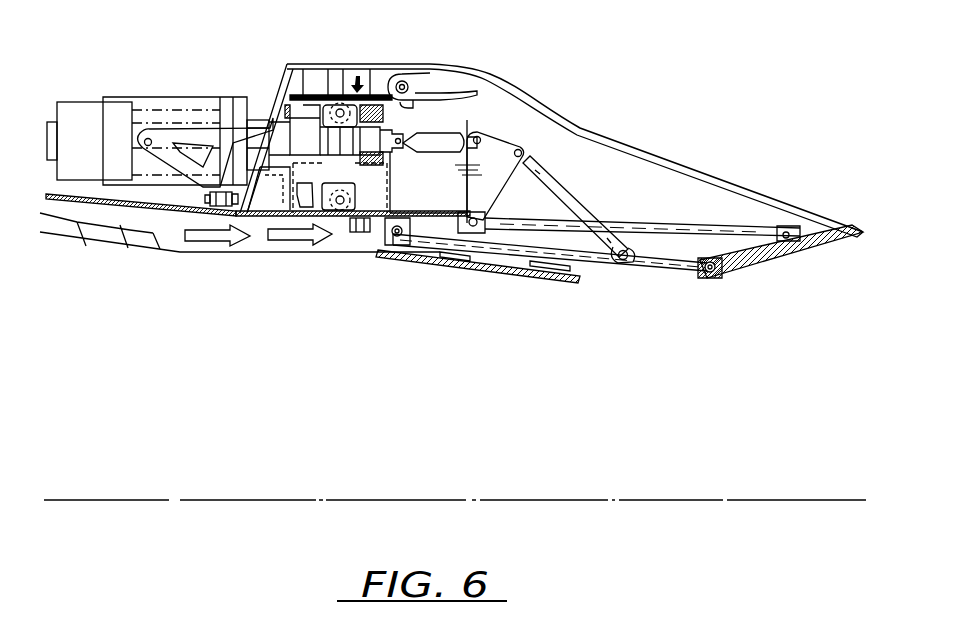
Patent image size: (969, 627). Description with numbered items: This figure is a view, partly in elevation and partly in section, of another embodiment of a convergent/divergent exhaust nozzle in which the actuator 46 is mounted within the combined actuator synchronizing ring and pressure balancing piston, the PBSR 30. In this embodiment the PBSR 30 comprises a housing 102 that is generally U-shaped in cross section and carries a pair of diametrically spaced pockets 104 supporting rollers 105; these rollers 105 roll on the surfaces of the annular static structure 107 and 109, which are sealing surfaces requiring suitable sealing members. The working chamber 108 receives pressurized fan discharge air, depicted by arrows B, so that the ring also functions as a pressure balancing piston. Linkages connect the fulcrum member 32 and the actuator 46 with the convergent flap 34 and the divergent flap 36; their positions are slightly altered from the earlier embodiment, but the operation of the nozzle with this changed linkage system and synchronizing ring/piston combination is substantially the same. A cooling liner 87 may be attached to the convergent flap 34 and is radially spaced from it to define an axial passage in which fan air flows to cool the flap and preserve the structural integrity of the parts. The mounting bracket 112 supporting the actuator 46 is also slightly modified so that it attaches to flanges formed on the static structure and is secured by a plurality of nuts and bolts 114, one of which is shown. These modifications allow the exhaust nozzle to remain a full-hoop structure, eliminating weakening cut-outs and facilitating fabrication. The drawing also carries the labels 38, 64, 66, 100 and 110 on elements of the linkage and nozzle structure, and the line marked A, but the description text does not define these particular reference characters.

The combined actuator synchronizing ring and pressure balancing piston (PBSR) 30 is at (360, 68).
The fulcrum link 32 is at (495, 135).
The convergent flap 34 is at (596, 267).
The divergent flap 36 is at (757, 264).
The actuator rod 38 is at (447, 133).
The actuator 46 is at (188, 97).
The strut 64 is at (570, 192).
The connecting rod 66 is at (633, 223).
The cooling liner 87 is at (478, 280).
The hinge body 100 is at (289, 66).
The housing 102 is at (392, 192).
The pocket 104 is at (313, 128).
The roller 105 is at (340, 100).
The annular static structure 107 is at (413, 70).
The working chamber 108 is at (300, 150).
The annular static structure 109 is at (400, 212).
The air duct 110 is at (298, 217).
The mounting bracket 112 is at (192, 166).
The nuts and bolts 114 is at (203, 205).
The ground plane A is at (413, 500).
The arrows B is at (212, 244).